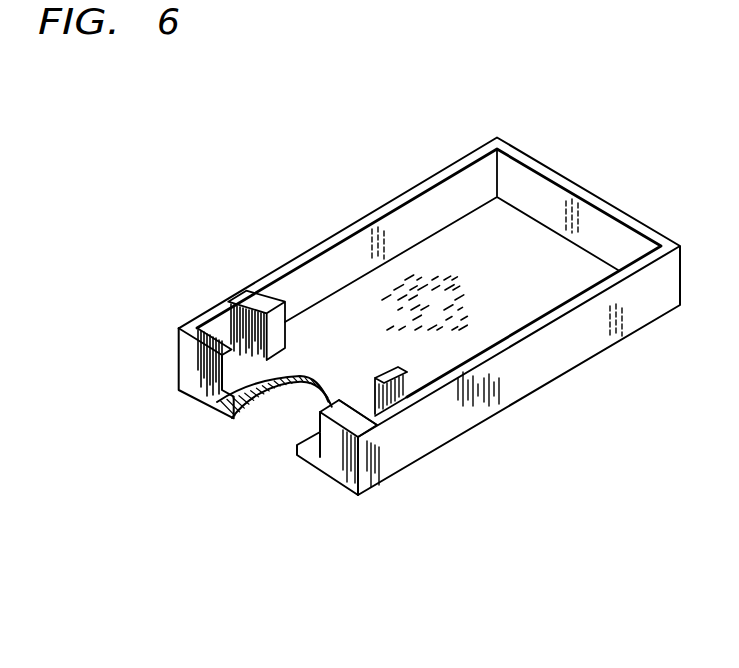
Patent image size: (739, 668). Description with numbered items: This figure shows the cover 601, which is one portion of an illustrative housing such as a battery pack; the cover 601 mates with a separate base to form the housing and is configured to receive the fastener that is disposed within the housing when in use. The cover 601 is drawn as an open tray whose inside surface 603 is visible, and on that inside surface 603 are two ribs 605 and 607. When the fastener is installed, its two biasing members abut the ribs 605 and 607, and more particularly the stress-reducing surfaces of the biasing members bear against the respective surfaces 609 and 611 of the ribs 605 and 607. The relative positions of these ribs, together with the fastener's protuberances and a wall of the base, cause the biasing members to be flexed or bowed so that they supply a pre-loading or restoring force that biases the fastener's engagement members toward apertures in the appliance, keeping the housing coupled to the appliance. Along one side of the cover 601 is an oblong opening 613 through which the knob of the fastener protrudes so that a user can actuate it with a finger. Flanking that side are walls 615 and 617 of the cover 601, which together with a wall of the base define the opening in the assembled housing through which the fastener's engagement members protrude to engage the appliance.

The cover 601 is at (369, 170).
The inside surface 603 is at (434, 208).
The rib 605 is at (268, 300).
The rib 607 is at (400, 382).
The surface 609 is at (225, 313).
The surface 611 is at (385, 405).
The oblong opening 613 is at (285, 420).
The wall 615 is at (192, 378).
The wall 617 is at (333, 462).